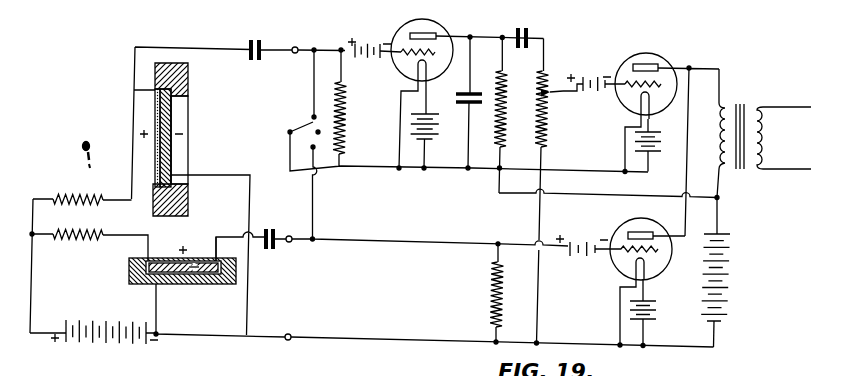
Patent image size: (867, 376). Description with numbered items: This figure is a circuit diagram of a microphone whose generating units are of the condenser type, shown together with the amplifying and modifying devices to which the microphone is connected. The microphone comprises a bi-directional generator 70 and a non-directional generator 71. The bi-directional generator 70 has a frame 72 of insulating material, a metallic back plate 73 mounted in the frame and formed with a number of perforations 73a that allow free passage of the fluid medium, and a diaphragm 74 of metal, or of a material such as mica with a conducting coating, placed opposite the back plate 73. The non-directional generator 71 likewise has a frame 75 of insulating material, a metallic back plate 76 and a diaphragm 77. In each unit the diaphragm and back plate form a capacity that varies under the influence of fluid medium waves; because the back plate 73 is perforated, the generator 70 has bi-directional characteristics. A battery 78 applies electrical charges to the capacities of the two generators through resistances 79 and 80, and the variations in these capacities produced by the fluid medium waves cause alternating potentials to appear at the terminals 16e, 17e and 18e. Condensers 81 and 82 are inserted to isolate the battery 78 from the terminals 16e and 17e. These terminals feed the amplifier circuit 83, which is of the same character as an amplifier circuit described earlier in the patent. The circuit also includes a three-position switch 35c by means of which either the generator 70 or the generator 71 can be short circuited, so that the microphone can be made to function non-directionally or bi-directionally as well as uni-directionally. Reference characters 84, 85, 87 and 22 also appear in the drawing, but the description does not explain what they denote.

The bi-directional generator 70 is at (163, 128).
The frame 72 is at (186, 78).
The metallic back plate 73 is at (168, 103).
The perforations 73a is at (168, 150).
The diaphragm 74 is at (150, 147).
The resistance 79 is at (72, 191).
The resistance 80 is at (75, 241).
The non-directional generator 71 is at (164, 273).
The frame 75 is at (193, 281).
The metallic back plate 76 is at (163, 281).
The diaphragm 77 is at (199, 253).
The battery 78 is at (105, 340).
The condenser 81 is at (259, 58).
The condenser 82 is at (269, 223).
The terminal 16e is at (292, 43).
The terminal 17e is at (289, 238).
The terminal 18e is at (288, 332).
The three-position switch 35c is at (298, 120).
The amplifier circuit 83 is at (490, 201).
The conductor 84 is at (262, 375).
The conductor 85 is at (208, 375).
The conductor 87 is at (167, 375).
The line to apparatus 22 is at (316, 368).